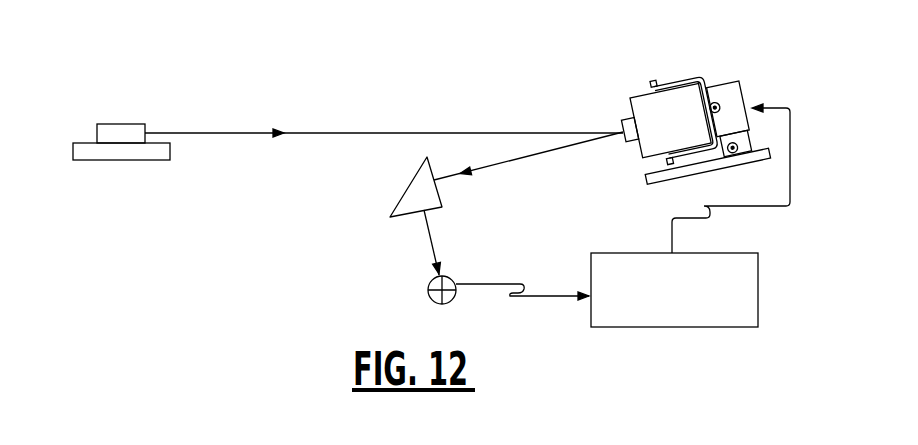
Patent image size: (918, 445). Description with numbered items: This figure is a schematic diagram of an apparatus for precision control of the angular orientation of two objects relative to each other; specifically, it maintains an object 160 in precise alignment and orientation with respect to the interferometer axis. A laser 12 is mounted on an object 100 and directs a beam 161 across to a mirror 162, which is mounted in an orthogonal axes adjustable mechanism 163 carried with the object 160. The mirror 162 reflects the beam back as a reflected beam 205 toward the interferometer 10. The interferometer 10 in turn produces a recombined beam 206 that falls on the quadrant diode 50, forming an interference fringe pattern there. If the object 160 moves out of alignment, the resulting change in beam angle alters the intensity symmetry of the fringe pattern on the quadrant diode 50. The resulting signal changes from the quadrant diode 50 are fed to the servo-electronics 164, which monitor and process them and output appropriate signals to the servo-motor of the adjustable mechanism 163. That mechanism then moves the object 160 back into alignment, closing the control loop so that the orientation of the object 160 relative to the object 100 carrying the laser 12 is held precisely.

The interferometer 10 is at (410, 193).
The laser 12 is at (133, 124).
The quadrant diode 50 is at (428, 292).
The object 100 is at (142, 160).
The object 160 is at (641, 97).
The beam 161 is at (410, 133).
The mirror 162 is at (621, 120).
The orthogonal axes adjustable mechanism 163 is at (744, 88).
The servo-electronics 164 is at (733, 253).
The reflected beam 205 is at (515, 163).
The recombined beam 206 is at (436, 246).